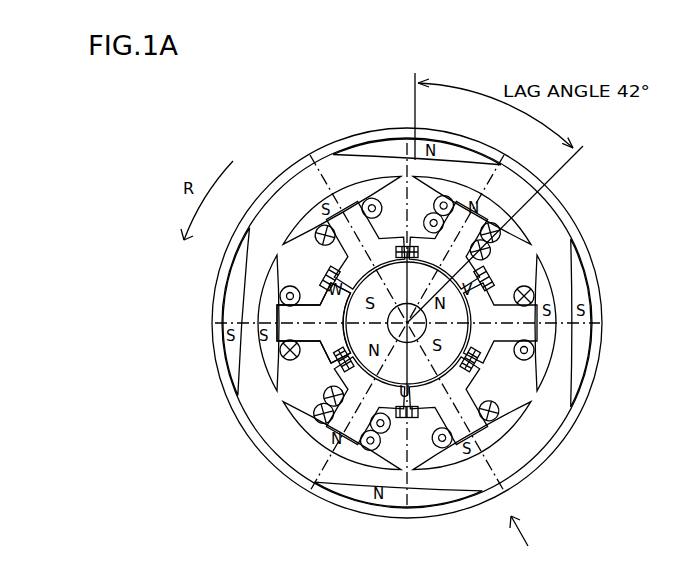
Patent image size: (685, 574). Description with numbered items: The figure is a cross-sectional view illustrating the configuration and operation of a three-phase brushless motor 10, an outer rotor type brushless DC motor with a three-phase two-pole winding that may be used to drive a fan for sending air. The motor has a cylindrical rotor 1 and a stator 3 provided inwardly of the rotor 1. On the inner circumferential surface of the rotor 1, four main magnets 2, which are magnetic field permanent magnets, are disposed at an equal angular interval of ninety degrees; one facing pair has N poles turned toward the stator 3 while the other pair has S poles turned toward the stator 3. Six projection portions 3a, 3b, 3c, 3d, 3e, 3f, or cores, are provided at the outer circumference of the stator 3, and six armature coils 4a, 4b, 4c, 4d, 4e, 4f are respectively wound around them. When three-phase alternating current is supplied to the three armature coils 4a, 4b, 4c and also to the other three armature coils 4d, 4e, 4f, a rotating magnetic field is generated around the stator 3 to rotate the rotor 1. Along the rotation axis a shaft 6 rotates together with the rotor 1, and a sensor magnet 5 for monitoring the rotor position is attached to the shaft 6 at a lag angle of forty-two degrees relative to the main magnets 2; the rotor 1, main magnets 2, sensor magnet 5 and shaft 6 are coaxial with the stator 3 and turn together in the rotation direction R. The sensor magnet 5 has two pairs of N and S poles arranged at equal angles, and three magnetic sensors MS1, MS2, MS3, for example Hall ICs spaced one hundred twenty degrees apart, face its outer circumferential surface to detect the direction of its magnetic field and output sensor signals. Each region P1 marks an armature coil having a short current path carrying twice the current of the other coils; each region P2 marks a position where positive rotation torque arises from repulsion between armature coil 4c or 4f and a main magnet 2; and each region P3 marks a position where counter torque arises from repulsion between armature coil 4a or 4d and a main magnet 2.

The rotor 1 is at (602, 344).
The main magnet 2 is at (460, 503).
The stator 3 is at (478, 297).
The projection portion 3a is at (314, 323).
The projection portion 3b is at (360, 242).
The projection portion 3c is at (454, 242).
The projection portion 3d is at (501, 323).
The projection portion 3e is at (454, 404).
The projection portion 3f is at (360, 404).
The armature coil 4a is at (270, 255).
The armature coil 4b is at (300, 238).
The armature coil 4c is at (530, 222).
The armature coil 4d is at (548, 393).
The armature coil 4e is at (508, 415).
The armature coil 4f is at (284, 414).
The sensor magnet 5 is at (422, 470).
The shaft 6 is at (350, 368).
The three-phase brushless motor 10 is at (523, 539).
The magnetic sensor MS1 is at (343, 368).
The magnetic sensor MS2 is at (478, 370).
The magnetic sensor MS3 is at (402, 247).
The region P1 is at (290, 470).
The region P2 is at (337, 495).
The region P3 is at (575, 392).